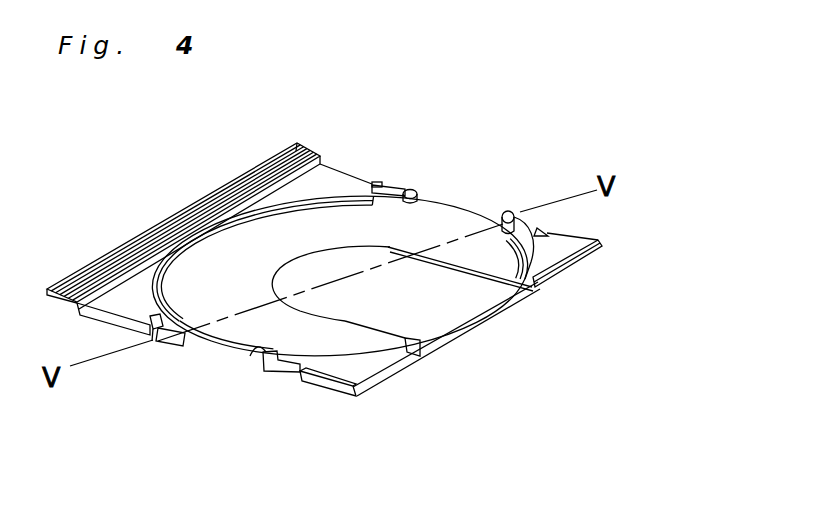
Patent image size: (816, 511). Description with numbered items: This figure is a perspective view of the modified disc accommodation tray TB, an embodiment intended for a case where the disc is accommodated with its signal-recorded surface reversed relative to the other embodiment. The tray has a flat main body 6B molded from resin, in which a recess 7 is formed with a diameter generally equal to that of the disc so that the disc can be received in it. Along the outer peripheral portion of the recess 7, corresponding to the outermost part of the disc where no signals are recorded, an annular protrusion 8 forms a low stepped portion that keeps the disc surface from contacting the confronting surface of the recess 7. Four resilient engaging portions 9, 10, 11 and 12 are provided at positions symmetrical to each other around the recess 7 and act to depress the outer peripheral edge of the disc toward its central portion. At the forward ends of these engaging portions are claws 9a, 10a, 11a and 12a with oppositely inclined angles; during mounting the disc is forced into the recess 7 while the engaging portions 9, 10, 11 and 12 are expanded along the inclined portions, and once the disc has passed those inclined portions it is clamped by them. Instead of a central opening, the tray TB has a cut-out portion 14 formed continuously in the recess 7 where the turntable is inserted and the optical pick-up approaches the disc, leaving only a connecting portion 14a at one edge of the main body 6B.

The accommodation tray TB is at (639, 139).
The main body 6B is at (345, 372).
The recess 7 is at (437, 217).
The annular protrusion 8 is at (337, 199).
The engaging portion 9 is at (158, 343).
The claw 9a is at (183, 343).
The engaging portion 10 is at (277, 367).
The claw 10a is at (256, 345).
The engaging portion 11 is at (410, 188).
The claw 11a is at (423, 189).
The engaging portion 12 is at (533, 222).
The claw 12a is at (503, 212).
The cut-out portion 14 is at (443, 305).
The connecting portion 14a is at (438, 340).